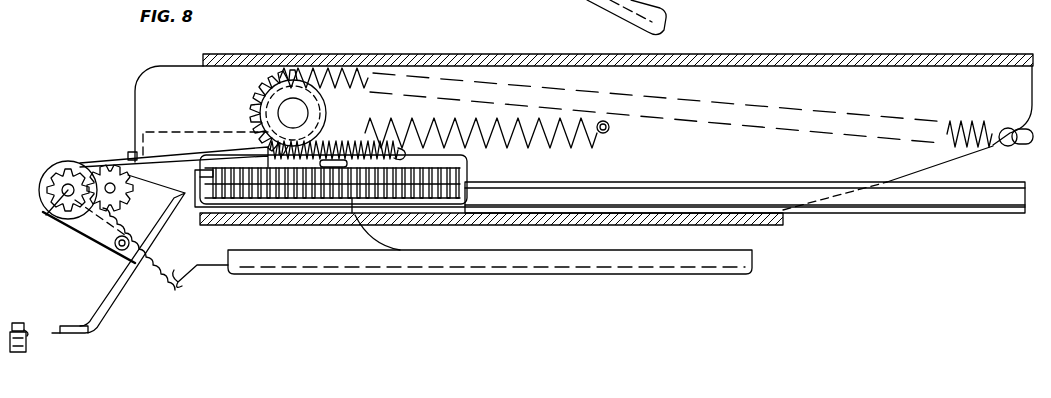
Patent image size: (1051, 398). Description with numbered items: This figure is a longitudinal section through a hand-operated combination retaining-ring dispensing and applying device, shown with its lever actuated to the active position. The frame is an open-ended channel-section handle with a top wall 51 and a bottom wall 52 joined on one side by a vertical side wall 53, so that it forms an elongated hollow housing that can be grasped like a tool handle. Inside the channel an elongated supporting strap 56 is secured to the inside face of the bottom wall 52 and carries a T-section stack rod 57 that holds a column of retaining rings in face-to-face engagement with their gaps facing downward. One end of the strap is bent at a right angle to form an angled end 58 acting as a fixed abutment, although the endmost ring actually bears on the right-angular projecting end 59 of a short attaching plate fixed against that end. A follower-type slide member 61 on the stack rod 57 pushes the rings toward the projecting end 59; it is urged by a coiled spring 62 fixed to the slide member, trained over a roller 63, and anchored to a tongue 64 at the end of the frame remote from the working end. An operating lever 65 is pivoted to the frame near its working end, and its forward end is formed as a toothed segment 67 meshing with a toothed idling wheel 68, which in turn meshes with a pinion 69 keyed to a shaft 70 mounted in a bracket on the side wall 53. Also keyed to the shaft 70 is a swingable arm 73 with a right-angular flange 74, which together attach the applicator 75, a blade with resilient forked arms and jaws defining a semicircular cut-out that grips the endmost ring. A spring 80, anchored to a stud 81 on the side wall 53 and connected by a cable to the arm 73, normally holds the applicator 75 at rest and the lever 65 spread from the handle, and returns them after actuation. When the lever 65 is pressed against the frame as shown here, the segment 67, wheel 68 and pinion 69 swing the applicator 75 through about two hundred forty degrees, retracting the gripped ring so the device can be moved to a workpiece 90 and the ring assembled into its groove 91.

The top wall 51 is at (857, 55).
The bottom wall 52 is at (767, 221).
The vertical side wall 53 is at (897, 100).
The supporting strap 56 is at (882, 210).
The stack rod 57 is at (957, 198).
The angled end of supporting strap 58 is at (190, 220).
The projecting end of attaching plate 59 is at (203, 133).
The slide member 61 is at (465, 164).
The coiled spring 62 is at (365, 66).
The roller 63 is at (303, 70).
The tongue 64 is at (1020, 140).
The operating lever 65 is at (587, 263).
The toothed segment 67 is at (188, 284).
The toothed idling wheel 68 is at (100, 165).
The pinion 69 is at (62, 170).
The shaft 70 is at (47, 219).
The swingable arm 73 is at (100, 230).
The flange 74 is at (130, 264).
The applicator 75 is at (120, 305).
The spring 80 is at (455, 130).
The stud 81 is at (608, 134).
The workpiece 90 is at (30, 346).
The groove 91 is at (28, 328).